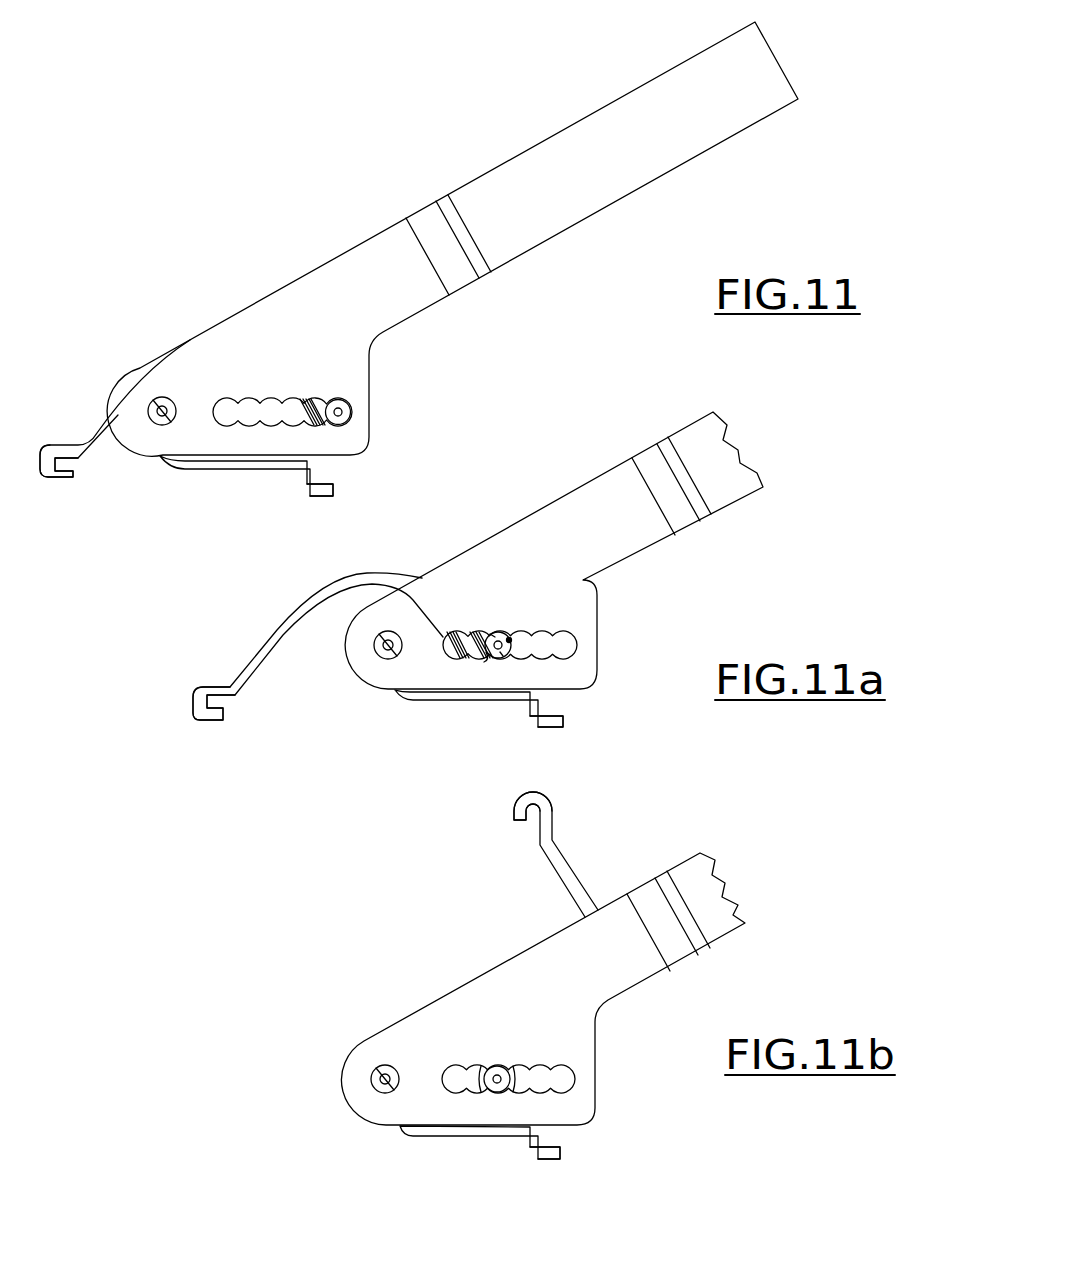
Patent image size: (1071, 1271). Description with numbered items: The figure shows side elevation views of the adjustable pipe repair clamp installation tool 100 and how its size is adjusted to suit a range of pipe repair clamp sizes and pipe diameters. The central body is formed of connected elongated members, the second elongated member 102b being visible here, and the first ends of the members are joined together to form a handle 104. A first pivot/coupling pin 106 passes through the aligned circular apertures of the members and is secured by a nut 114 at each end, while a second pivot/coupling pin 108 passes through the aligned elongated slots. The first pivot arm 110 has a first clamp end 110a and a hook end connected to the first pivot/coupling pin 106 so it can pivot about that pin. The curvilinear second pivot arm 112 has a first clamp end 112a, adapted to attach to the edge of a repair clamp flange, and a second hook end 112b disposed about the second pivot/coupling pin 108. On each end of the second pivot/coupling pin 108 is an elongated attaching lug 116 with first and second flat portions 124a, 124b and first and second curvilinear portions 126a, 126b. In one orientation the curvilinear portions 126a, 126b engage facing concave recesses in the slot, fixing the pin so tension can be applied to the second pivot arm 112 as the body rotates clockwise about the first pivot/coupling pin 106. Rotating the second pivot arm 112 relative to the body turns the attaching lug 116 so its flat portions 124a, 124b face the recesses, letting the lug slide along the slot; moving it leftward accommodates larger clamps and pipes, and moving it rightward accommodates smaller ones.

In FIG. 11, the adjustable pipe repair clamp installation tool 100 is at (307, 243).
In FIG. 11A, the adjustable pipe repair clamp installation tool 100 is at (562, 480).
In FIG. 11B, the adjustable pipe repair clamp installation tool 100 is at (412, 952).
In FIG. 11, the second elongated member 102b is at (555, 204).
In FIG. 11A, the second elongated member 102b is at (633, 523).
In FIG. 11B, the second elongated member 102b is at (625, 960).
In FIG. 11, the handle 104 is at (620, 125).
In FIG. 11A, the handle 104 is at (705, 452).
In FIG. 11B, the handle 104 is at (715, 890).
In FIG. 11, the first pivot/coupling pin 106 is at (160, 417).
In FIG. 11A, the first pivot/coupling pin 106 is at (382, 652).
In FIG. 11B, the first pivot/coupling pin 106 is at (385, 1070).
In FIG. 11, the second pivot/coupling pin 108 is at (350, 416).
In FIG. 11A, the second pivot/coupling pin 108 is at (510, 652).
In FIG. 11B, the second pivot/coupling pin 108 is at (510, 1087).
In FIG. 11, the first pivot arm 110 is at (243, 466).
In FIG. 11A, the first pivot arm 110 is at (497, 699).
In FIG. 11B, the first pivot arm 110 is at (475, 1137).
In FIG. 11, the first clamp end 110a is at (327, 495).
In FIG. 11A, the first clamp end 110a is at (563, 724).
In FIG. 11B, the first clamp end 110a is at (558, 1160).
In FIG. 11, the second pivot arm 112 is at (98, 432).
In FIG. 11A, the second pivot arm 112 is at (275, 635).
In FIG. 11B, the second pivot arm 112 is at (572, 872).
In FIG. 11, the first clamp end 112a is at (57, 480).
In FIG. 11A, the first clamp end 112a is at (205, 722).
In FIG. 11B, the first clamp end 112a is at (513, 805).
In FIG. 11, the second hook end 112b is at (302, 420).
In FIG. 11A, the second hook end 112b is at (443, 633).
In FIG. 11, the nut 114 is at (170, 425).
In FIG. 11A, the nut 114 is at (398, 654).
In FIG. 11B, the nut 114 is at (378, 1088).
In FIG. 11, the attaching lug 116 is at (347, 407).
In FIG. 11A, the attaching lug 116 is at (515, 640).
In FIG. 11B, the attaching lug 116 is at (495, 1068).
In FIG. 11A, the first flat portion 124a is at (487, 656).
In FIG. 11A, the second flat portion 124b is at (508, 638).
In FIG. 11A, the first curvilinear portion 126a is at (493, 636).
In FIG. 11A, the second curvilinear portion 126b is at (502, 654).